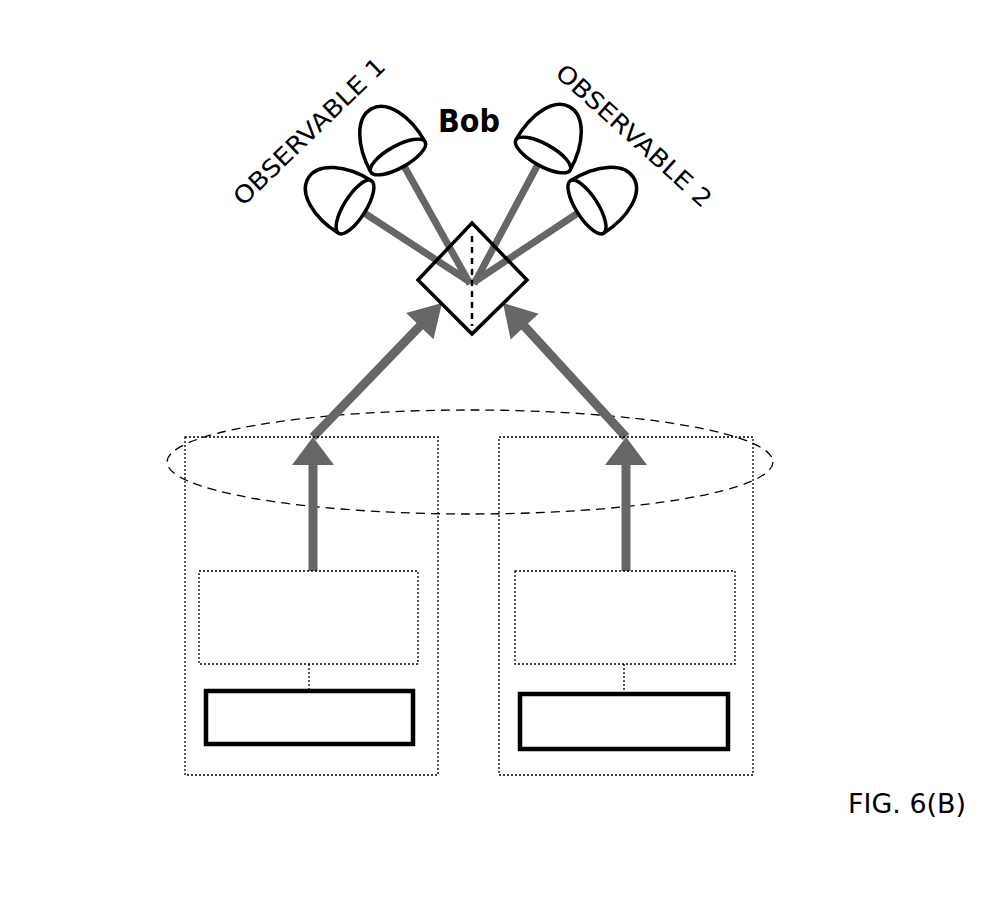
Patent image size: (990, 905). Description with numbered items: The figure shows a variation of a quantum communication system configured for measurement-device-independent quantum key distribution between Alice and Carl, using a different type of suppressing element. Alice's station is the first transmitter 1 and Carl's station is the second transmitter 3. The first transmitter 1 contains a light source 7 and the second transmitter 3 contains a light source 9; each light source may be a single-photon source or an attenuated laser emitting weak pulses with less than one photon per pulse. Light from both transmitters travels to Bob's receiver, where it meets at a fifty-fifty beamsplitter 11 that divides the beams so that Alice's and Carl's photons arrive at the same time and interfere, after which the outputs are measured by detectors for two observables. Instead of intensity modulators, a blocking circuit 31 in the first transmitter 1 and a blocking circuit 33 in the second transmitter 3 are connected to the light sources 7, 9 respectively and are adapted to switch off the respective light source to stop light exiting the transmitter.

The first transmitter 1 is at (313, 778).
The second transmitter 3 is at (758, 696).
The light source 7 is at (199, 620).
The light source 9 is at (740, 618).
The beamsplitter 11 is at (415, 281).
The blocking circuit 31 is at (206, 719).
The blocking circuit 33 is at (657, 754).